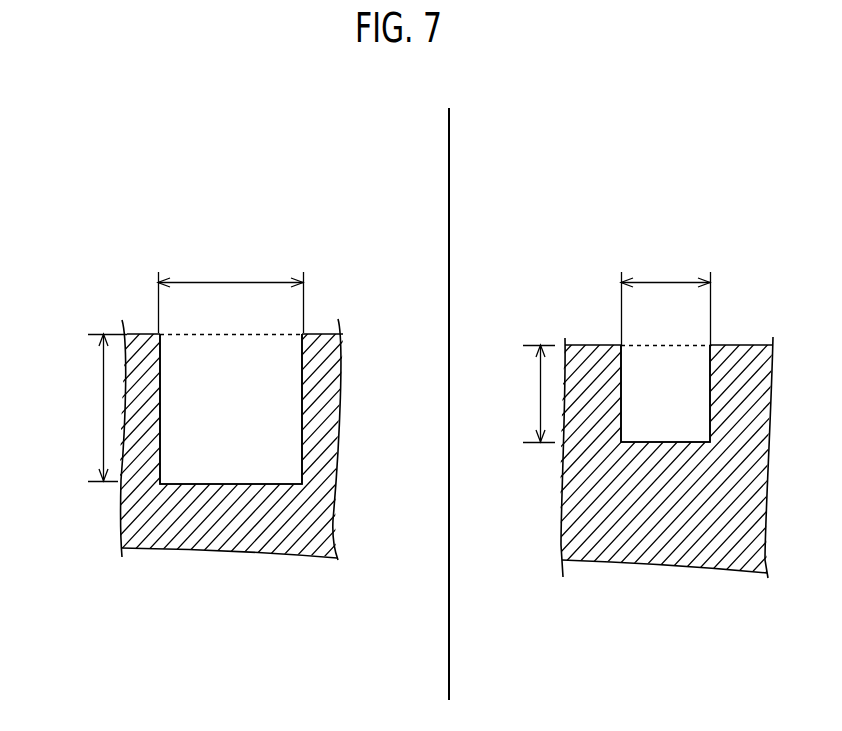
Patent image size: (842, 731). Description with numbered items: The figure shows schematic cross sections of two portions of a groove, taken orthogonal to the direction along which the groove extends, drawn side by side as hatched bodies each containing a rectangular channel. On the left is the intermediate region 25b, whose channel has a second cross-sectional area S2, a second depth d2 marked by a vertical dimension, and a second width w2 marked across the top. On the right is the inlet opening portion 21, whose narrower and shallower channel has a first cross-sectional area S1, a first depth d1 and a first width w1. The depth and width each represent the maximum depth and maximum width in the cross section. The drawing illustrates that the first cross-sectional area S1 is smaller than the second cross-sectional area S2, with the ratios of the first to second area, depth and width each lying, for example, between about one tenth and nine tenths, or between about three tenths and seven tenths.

The intermediate region 25b is at (113, 200).
The inlet opening portion 21 is at (556, 217).
The second width w2 is at (231, 290).
The second depth d2 is at (96, 408).
The second cross-sectional area S2 is at (231, 409).
The first width w1 is at (666, 296).
The first depth d1 is at (526, 394).
The first cross-sectional area S1 is at (665, 393).